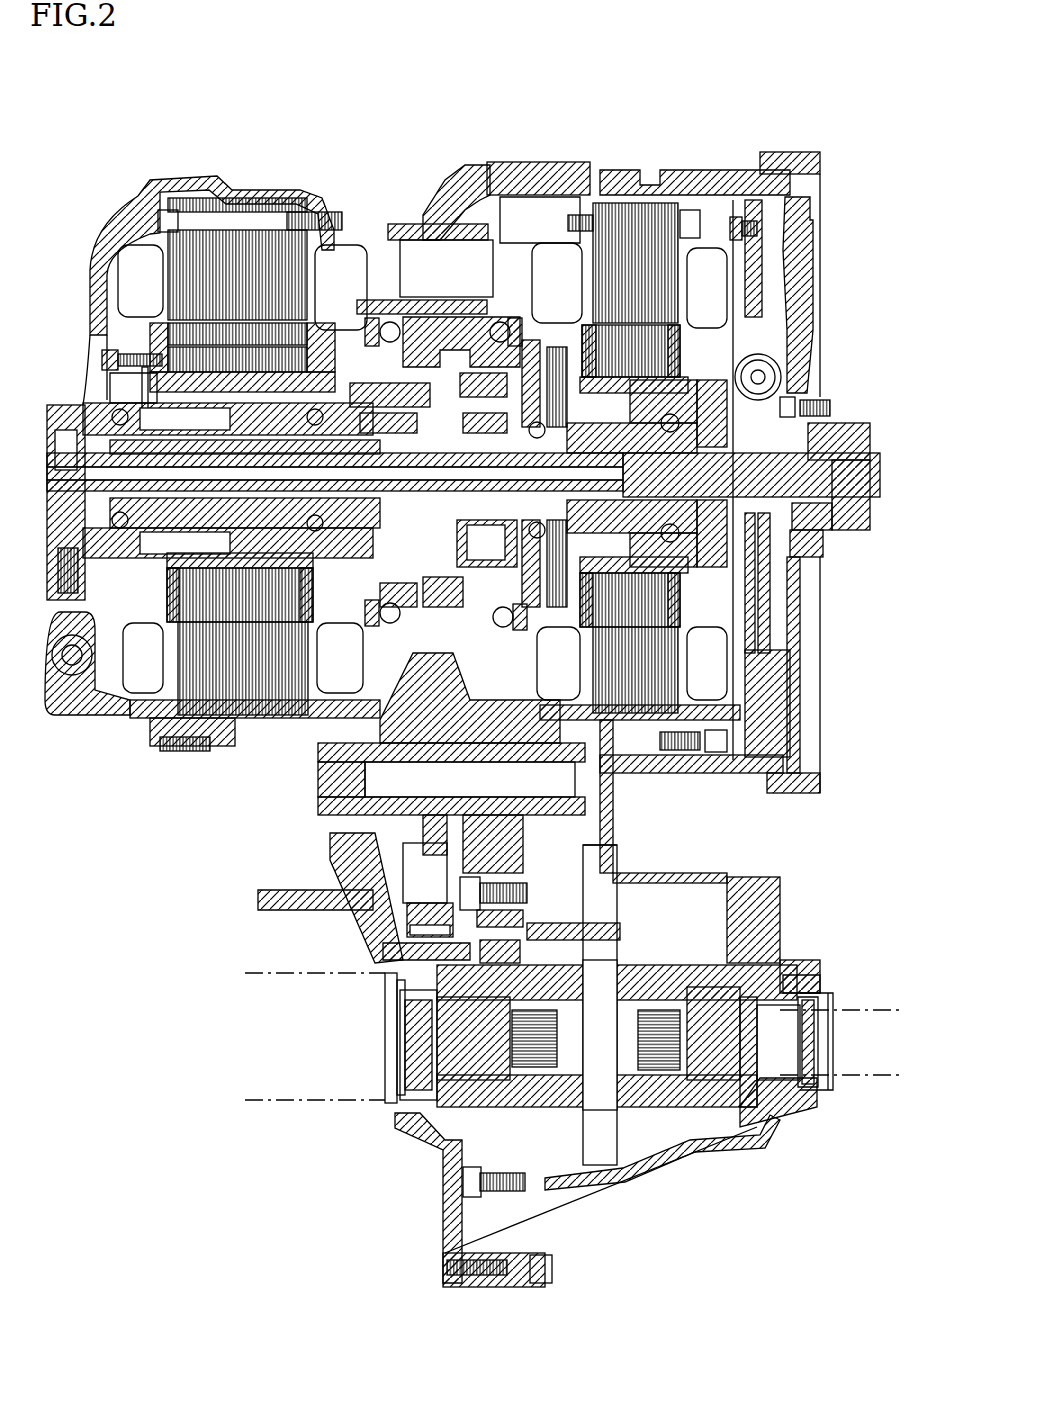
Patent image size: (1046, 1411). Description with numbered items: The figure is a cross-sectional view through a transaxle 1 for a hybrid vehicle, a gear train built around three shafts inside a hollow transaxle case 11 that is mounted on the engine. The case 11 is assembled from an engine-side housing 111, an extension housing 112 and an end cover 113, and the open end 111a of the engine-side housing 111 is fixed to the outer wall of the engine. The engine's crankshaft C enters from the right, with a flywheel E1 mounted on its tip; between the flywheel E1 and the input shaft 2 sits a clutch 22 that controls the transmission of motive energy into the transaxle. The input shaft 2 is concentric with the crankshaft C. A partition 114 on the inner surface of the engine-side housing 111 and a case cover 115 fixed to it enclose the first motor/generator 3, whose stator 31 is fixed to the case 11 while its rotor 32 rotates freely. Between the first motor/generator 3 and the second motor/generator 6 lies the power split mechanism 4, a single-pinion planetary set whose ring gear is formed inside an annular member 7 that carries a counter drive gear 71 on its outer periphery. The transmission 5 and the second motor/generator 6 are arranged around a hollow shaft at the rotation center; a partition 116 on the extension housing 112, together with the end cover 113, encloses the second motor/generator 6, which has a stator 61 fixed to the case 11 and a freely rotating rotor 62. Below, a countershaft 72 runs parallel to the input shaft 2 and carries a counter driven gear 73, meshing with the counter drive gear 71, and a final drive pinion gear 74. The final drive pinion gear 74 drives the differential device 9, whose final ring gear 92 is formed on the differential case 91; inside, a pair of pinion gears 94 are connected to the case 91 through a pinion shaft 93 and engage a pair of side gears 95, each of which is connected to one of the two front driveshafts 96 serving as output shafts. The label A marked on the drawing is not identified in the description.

The transaxle 1 is at (104, 80).
The input shaft 2 is at (773, 583).
The first motor/generator 3 is at (550, 232).
The power split mechanism 4 is at (480, 562).
The transmission 5 is at (418, 305).
The second motor/generator 6 is at (112, 686).
The annular member 7 is at (420, 323).
The differential device 9 is at (702, 1132).
The transaxle case 11 is at (525, 148).
The clutch 22 is at (773, 633).
The stator 31 is at (613, 720).
The rotor 32 is at (650, 350).
The stator 61 is at (262, 720).
The rotor 62 is at (257, 337).
The counter drive gear 71 is at (398, 280).
The countershaft 72 is at (375, 780).
The counter driven gear 73 is at (413, 917).
The final drive pinion gear 74 is at (468, 702).
The differential case 91 is at (693, 977).
The final ring gear 92 is at (470, 1220).
The pinion shaft 93 is at (640, 1127).
The pinion gears 94 is at (620, 933).
The side gears 95 is at (540, 985).
The front driveshafts 96 is at (873, 1000).
The engine-side housing 111 is at (700, 172).
The open end 111a is at (813, 770).
The extension housing 112 is at (240, 192).
The end cover 113 is at (107, 213).
The partition 114 is at (723, 197).
The case cover 115 is at (490, 207).
The partition 116 is at (363, 303).
The section axis A is at (597, 905).
The crankshaft C is at (845, 428).
The flywheel E1 is at (803, 620).